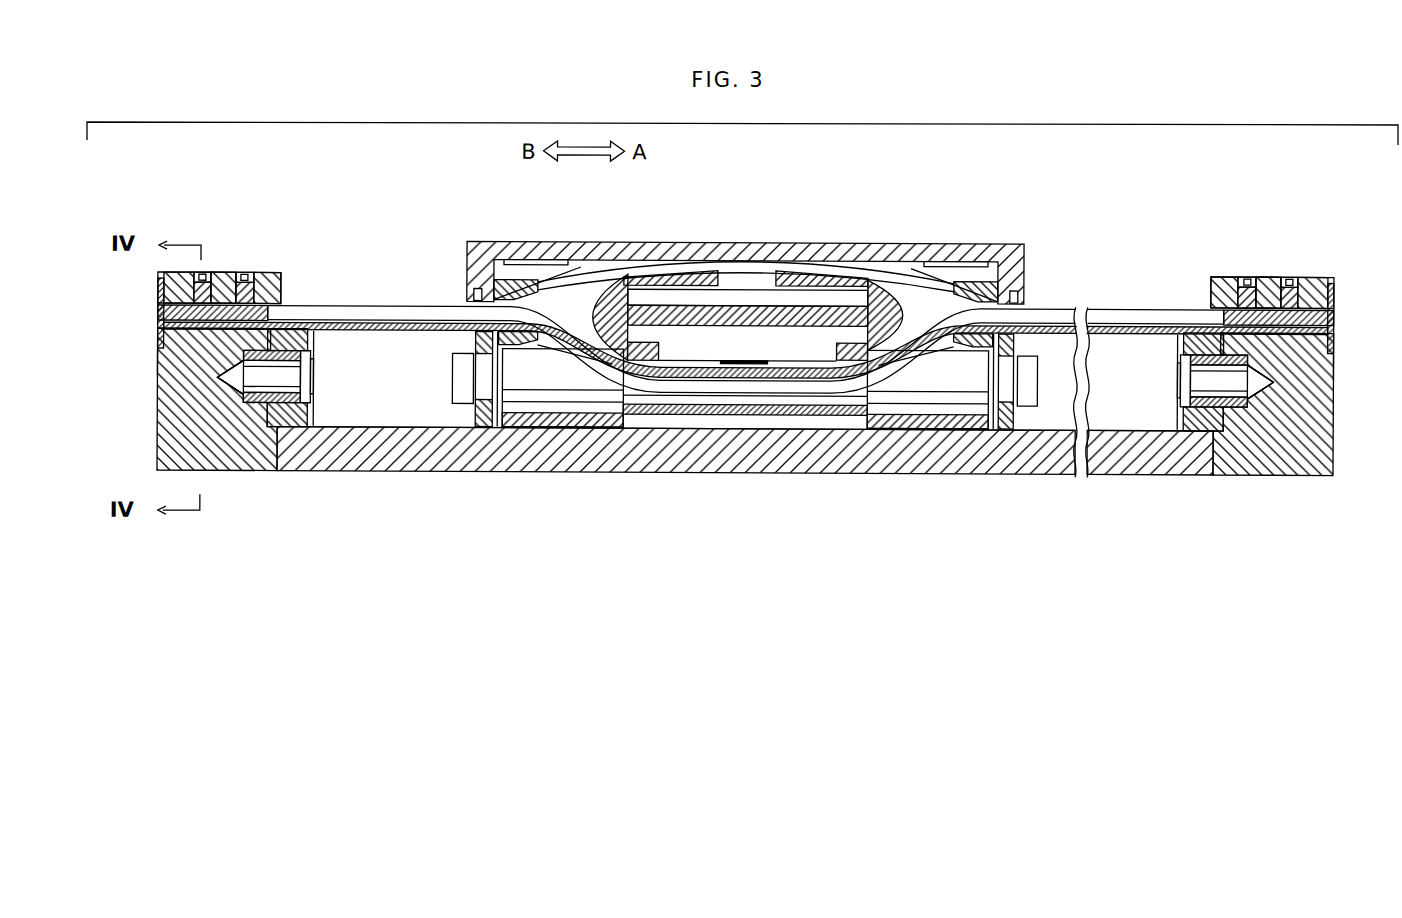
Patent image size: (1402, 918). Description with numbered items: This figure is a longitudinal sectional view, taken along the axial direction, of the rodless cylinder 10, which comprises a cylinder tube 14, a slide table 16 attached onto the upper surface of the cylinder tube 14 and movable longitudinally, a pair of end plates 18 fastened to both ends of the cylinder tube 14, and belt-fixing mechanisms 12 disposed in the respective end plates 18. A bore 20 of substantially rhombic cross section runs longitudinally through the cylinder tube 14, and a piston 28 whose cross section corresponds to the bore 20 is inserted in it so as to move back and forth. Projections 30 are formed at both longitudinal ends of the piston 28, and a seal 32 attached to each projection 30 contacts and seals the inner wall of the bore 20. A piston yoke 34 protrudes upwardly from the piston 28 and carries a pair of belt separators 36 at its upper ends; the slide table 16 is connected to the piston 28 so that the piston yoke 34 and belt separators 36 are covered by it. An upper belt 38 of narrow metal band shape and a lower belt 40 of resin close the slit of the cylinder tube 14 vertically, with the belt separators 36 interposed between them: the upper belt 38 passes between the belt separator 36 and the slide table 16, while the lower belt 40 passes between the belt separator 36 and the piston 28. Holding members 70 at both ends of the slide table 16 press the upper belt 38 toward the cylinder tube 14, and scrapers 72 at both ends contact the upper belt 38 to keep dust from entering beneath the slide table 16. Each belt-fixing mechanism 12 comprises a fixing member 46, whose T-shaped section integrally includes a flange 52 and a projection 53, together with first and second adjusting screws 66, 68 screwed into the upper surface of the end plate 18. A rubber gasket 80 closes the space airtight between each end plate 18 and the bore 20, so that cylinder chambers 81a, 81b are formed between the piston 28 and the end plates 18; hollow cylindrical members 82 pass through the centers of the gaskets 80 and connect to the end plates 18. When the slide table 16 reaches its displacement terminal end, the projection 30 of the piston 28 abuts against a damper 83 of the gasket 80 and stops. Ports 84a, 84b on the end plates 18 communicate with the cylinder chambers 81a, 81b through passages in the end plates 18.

The rodless cylinder 10 is at (900, 172).
The belt-fixing mechanism 12 is at (140, 308).
The cylinder tube 14 is at (698, 462).
The slide table 16 is at (793, 250).
The end plate 18 is at (160, 440).
The bore 20 is at (413, 428).
The piston 28 is at (570, 398).
The projection 30 is at (453, 402).
The seal 32 is at (465, 337).
The piston yoke 34 is at (740, 312).
The belt separator 36 is at (668, 268).
The upper belt 38 is at (347, 304).
The lower belt 40 is at (410, 332).
The fixing member 46 is at (156, 320).
The flange 52 is at (158, 378).
The projection 53 is at (236, 300).
The first adjusting screw 66 is at (203, 290).
The second adjusting screw 68 is at (250, 295).
The holding member 70 is at (505, 282).
The scraper 72 is at (478, 292).
The gasket 80 is at (299, 413).
The cylinder chamber 81a is at (357, 410).
The cylinder chamber 81b is at (1153, 340).
The hollow cylindrical member 82 is at (260, 403).
The damper 83 is at (314, 376).
The port 84a is at (237, 395).
The port 84b is at (1253, 400).